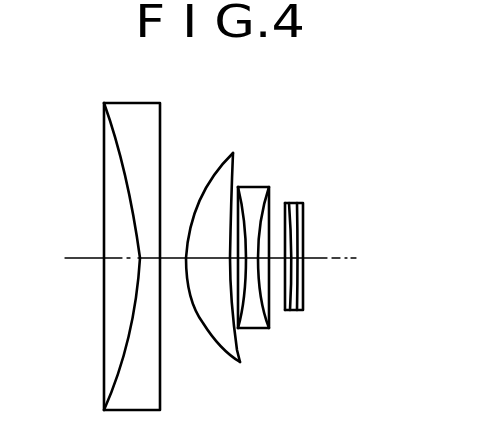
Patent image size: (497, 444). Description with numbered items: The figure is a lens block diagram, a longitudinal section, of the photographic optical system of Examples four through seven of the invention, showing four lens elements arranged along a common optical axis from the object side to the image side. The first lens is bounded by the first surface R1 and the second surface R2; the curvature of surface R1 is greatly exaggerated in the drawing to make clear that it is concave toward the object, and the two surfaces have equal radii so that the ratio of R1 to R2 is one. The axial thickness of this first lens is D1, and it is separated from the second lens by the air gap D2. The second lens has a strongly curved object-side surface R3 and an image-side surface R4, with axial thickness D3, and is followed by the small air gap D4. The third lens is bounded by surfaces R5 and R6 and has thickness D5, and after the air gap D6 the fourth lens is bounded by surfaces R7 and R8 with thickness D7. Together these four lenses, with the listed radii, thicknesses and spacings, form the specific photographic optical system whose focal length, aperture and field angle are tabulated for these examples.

The first lens surface R1 is at (104, 128).
The second lens surface R2 is at (160, 128).
The third lens surface R3 is at (207, 177).
The fourth lens surface R4 is at (235, 173).
The fifth lens surface R5 is at (253, 185).
The sixth lens surface R6 is at (270, 187).
The seventh lens surface R7 is at (288, 203).
The eighth lens surface R8 is at (303, 210).
The first axial thickness D1 is at (118, 258).
The second axial spacing D2 is at (174, 258).
The third axial thickness D3 is at (203, 258).
The fourth axial spacing D4 is at (235, 258).
The fifth axial thickness D5 is at (252, 258).
The sixth axial spacing D6 is at (276, 258).
The seventh axial thickness D7 is at (294, 258).